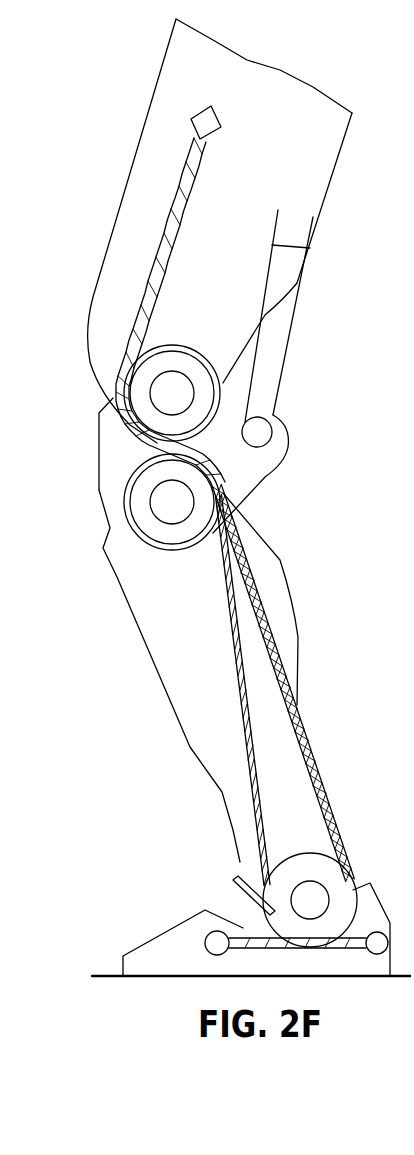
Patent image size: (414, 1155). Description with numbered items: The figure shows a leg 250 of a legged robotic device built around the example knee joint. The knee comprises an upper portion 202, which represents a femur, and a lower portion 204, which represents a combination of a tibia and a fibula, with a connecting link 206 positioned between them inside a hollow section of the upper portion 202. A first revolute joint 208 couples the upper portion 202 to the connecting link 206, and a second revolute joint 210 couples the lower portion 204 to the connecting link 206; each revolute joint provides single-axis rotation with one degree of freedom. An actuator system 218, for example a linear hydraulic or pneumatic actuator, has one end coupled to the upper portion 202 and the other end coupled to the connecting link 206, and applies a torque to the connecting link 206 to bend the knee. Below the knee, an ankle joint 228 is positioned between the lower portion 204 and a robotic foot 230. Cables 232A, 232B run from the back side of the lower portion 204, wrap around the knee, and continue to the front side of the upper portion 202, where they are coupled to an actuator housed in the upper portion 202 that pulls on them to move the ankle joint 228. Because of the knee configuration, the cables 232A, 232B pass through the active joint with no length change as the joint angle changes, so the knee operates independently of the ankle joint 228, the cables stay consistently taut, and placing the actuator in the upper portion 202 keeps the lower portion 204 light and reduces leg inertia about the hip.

The leg 250 is at (336, 74).
The upper portion 202 is at (152, 130).
The lower portion 204 is at (292, 635).
The connecting link 206 is at (107, 430).
The first revolute joint 208 is at (152, 393).
The second revolute joint 210 is at (150, 502).
The actuator system 218 is at (277, 352).
The ankle joint 228 is at (268, 905).
The robotic foot 230 is at (122, 957).
The cable 232A is at (310, 757).
The cable 232B is at (240, 707).